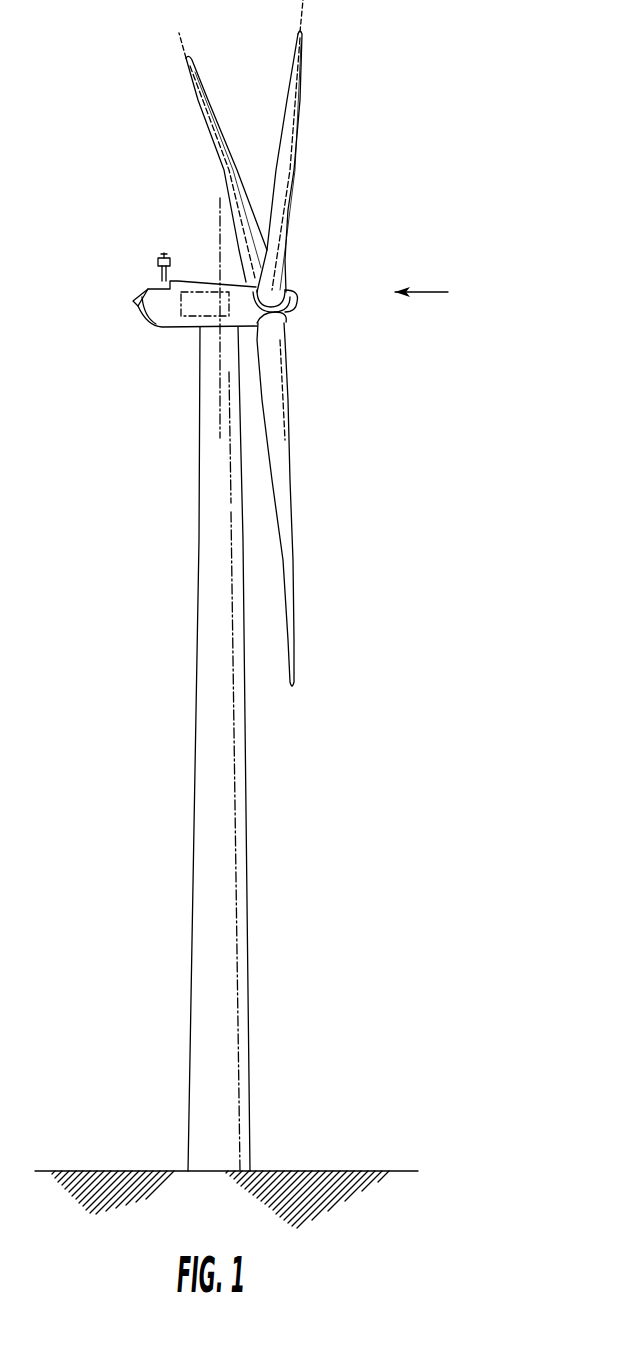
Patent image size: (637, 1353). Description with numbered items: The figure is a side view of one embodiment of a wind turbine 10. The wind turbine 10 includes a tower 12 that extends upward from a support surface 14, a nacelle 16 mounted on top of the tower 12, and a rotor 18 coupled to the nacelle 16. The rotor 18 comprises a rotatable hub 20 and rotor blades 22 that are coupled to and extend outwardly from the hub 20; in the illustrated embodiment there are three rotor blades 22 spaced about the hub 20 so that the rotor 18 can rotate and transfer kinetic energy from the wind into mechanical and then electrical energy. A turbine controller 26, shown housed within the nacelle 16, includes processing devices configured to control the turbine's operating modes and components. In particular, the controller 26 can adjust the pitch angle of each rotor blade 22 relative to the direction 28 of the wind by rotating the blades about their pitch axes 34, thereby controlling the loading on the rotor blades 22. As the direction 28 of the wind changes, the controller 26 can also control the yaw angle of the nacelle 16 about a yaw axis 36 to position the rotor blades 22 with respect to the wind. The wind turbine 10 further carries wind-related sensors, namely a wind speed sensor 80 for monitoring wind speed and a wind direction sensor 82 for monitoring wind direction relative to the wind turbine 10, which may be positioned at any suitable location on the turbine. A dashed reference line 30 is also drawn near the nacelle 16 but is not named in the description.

The wind turbine 10 is at (394, 119).
The tower 12 is at (185, 749).
The support surface 14 is at (112, 1171).
The nacelle 16 is at (153, 300).
The rotor 18 is at (303, 277).
The rotatable hub 20 is at (295, 307).
The rotor blade 22 is at (285, 155).
The turbine controller 26 is at (200, 290).
The direction of the wind 28 is at (427, 292).
The yaw axis 30 is at (218, 218).
The pitch axis 34 is at (343, 33).
The yaw axis 36 is at (220, 388).
The wind speed sensor 80 is at (110, 257).
The wind direction sensor 82 is at (157, 262).